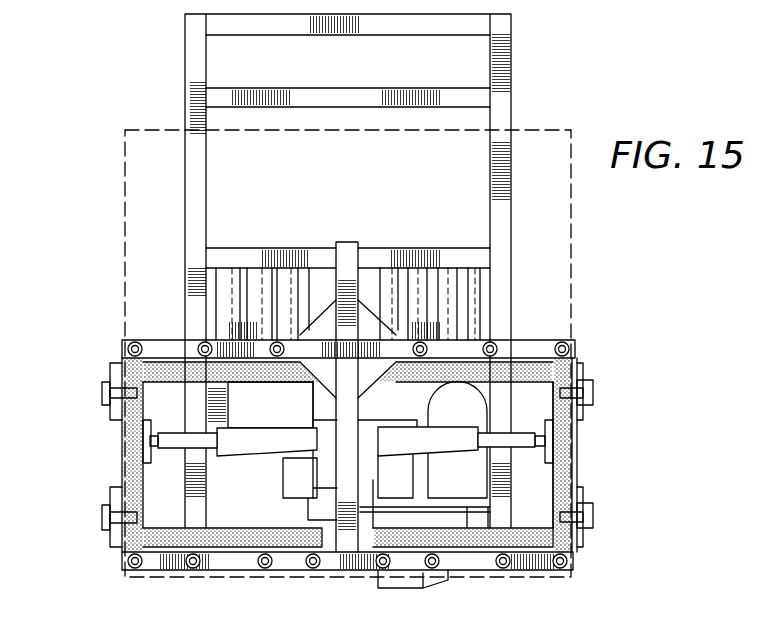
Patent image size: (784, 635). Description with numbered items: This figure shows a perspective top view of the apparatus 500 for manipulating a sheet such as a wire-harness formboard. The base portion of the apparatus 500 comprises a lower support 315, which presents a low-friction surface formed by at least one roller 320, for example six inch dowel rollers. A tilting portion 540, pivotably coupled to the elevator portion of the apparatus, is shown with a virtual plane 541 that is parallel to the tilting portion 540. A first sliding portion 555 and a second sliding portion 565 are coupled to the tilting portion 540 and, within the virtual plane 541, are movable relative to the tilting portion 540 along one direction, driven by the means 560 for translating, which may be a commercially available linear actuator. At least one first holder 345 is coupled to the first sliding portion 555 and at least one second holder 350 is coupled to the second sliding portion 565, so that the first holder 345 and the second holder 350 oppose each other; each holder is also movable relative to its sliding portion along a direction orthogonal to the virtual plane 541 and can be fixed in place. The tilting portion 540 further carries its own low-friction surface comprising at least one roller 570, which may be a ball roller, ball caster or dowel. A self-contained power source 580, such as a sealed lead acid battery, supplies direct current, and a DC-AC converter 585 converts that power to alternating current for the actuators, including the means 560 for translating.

The lower support 315 is at (498, 117).
The roller 320 is at (258, 278).
The first holder 345 is at (102, 393).
The second holder 350 is at (593, 393).
The apparatus 500 is at (620, 470).
The tilting portion 540 is at (166, 350).
The virtual plane 541 is at (125, 212).
The first sliding portion 555 is at (153, 373).
The means for translating 560 is at (273, 448).
The second sliding portion 565 is at (567, 376).
The roller 570 is at (563, 345).
The self-contained power source 580 is at (240, 490).
The DC-AC converter 585 is at (368, 478).